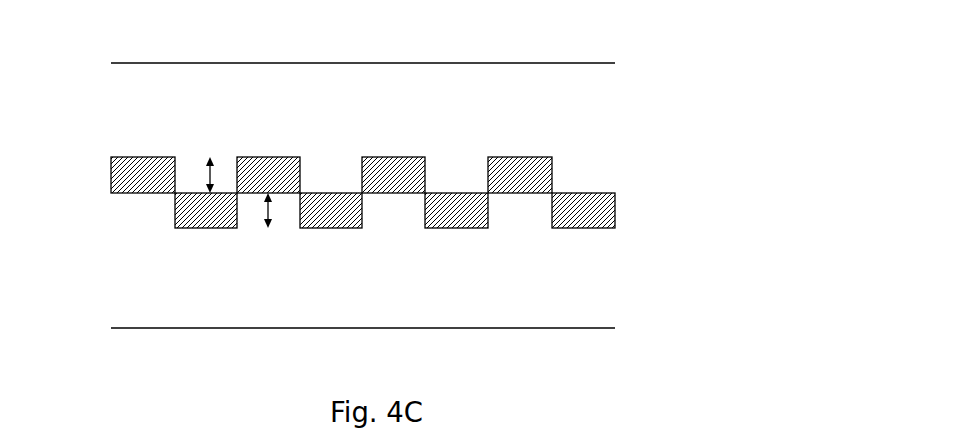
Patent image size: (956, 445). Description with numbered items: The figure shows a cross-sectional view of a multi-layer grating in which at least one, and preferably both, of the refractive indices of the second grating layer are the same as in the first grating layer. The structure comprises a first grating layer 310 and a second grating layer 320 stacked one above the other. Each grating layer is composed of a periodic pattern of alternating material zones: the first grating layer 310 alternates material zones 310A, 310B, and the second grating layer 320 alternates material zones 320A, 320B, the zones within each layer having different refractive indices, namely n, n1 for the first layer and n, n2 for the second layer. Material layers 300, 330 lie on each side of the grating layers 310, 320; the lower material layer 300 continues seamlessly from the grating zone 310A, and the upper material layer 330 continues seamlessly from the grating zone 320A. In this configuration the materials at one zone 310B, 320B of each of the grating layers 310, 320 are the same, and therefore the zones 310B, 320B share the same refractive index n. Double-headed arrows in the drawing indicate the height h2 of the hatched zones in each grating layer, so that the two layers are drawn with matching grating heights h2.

The material layer 300 is at (90, 233).
The first grating layer 310 is at (372, 240).
The material zone 310A is at (616, 210).
The material zone 310B is at (532, 222).
The second grating layer 320 is at (371, 149).
The material zone 320A is at (525, 162).
The material zone 320B is at (583, 165).
The material layer 330 is at (90, 65).
The grating height h2 is at (237, 275).
The refractive index n is at (402, 167).
The refractive index n1 is at (402, 233).
The refractive index n2 is at (343, 178).